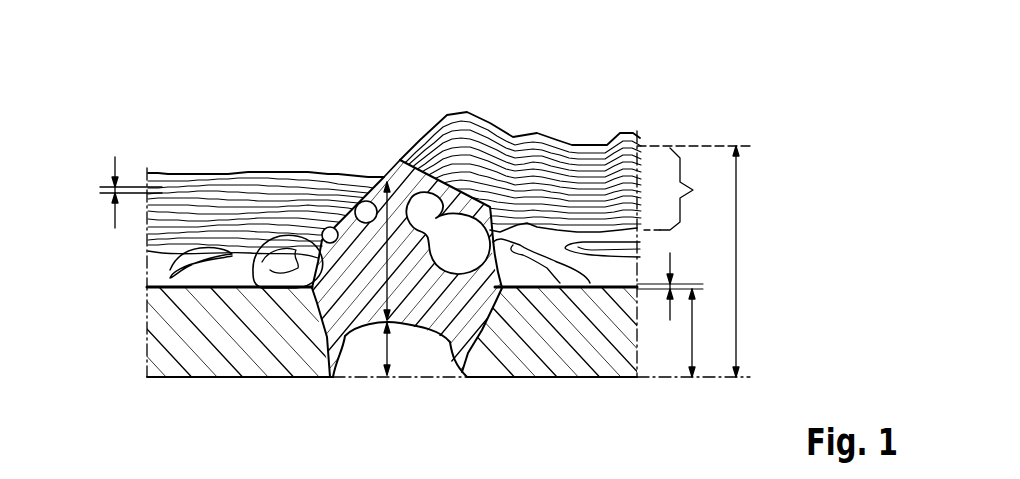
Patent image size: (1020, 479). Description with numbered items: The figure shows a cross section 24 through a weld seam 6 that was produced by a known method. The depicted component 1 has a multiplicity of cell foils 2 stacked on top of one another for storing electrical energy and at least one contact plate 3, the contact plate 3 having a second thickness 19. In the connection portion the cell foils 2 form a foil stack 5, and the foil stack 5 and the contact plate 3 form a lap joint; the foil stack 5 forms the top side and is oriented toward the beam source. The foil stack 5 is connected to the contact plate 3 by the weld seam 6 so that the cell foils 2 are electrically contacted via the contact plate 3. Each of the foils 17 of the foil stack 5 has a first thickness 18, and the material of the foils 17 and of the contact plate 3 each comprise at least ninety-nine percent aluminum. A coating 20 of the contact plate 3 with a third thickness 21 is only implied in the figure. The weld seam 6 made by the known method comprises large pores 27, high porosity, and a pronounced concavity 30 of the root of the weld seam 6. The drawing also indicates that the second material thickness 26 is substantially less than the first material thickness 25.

The component 1 is at (573, 85).
The cell foils 2 is at (160, 218).
The contact plate 3 is at (237, 352).
The foil stack 5 is at (679, 189).
The weld seam 6 is at (433, 322).
The foils 17 is at (183, 197).
The first thickness 18 is at (115, 160).
The second thickness 19 is at (692, 320).
The coating 20 is at (588, 283).
The third thickness 21 is at (673, 264).
The cross section 24 is at (785, 209).
The first material thickness 25 is at (737, 238).
The second material thickness 26 is at (385, 243).
The pores 27 is at (453, 230).
The concavity 30 is at (380, 353).